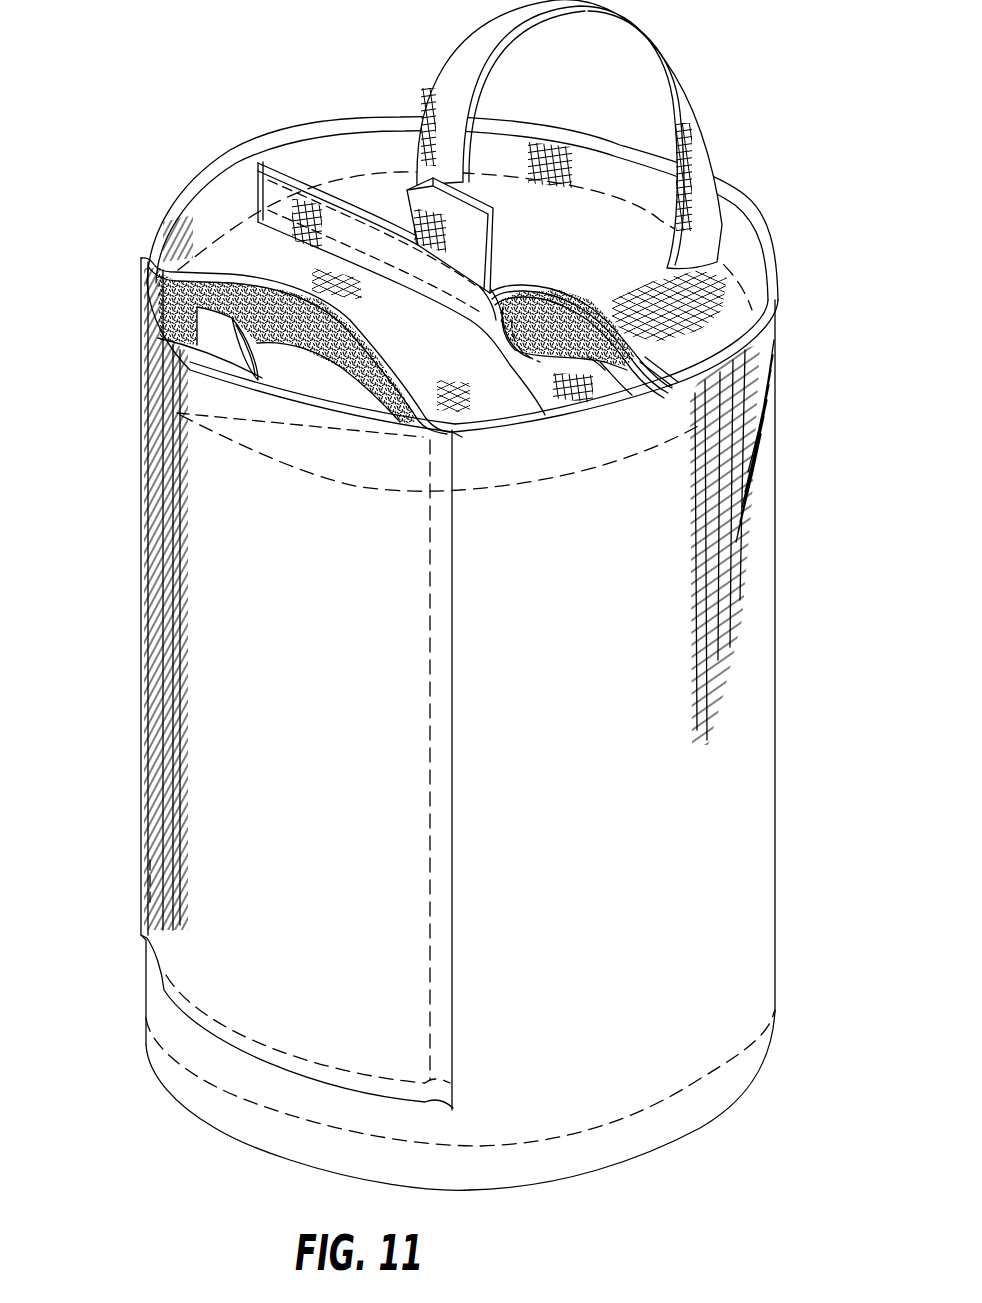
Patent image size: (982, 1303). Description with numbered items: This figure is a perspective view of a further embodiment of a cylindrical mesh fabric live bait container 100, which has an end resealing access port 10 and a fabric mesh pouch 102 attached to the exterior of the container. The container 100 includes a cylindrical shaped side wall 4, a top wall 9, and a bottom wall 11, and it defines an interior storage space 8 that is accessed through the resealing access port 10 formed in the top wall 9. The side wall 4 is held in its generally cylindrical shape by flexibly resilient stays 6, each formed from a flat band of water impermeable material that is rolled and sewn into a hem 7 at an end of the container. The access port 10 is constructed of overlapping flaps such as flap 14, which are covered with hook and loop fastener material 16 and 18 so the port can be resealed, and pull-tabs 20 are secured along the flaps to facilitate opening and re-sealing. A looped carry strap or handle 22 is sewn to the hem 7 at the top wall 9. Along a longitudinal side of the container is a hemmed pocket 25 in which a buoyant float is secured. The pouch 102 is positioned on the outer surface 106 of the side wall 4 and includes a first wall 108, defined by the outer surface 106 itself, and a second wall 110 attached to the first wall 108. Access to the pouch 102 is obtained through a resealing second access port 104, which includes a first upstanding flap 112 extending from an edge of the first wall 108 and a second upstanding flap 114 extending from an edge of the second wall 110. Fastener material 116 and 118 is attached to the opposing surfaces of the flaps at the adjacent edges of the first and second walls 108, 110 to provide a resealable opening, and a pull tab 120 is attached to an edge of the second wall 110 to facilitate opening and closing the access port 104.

The cylindrical mesh fabric container 100 is at (234, 93).
The side wall 4 is at (750, 598).
The stay 6 is at (591, 1168).
The hem 7 is at (484, 474).
The interior storage space 8 is at (550, 315).
The top wall 9 is at (690, 265).
The resealing access port 10 is at (527, 276).
The bottom wall 11 is at (651, 1158).
The flap 14 is at (632, 358).
The hook and loop fastener material 16 is at (588, 358).
The hook and loop fastener material 18 is at (603, 360).
The pull-tab 20 is at (412, 192).
The carry strap or handle 22 is at (690, 108).
The hemmed pocket 25 is at (768, 1093).
The fabric mesh pouch 102 is at (228, 601).
The second access port 104 is at (156, 293).
The outer surface 106 is at (480, 1116).
The first wall 108 is at (330, 398).
The second wall 110 is at (400, 625).
The first upstanding flap 112 is at (289, 283).
The second upstanding flap 114 is at (185, 364).
The fastener material 116 is at (350, 356).
The fastener material 118 is at (140, 413).
The pull tab 120 is at (175, 342).